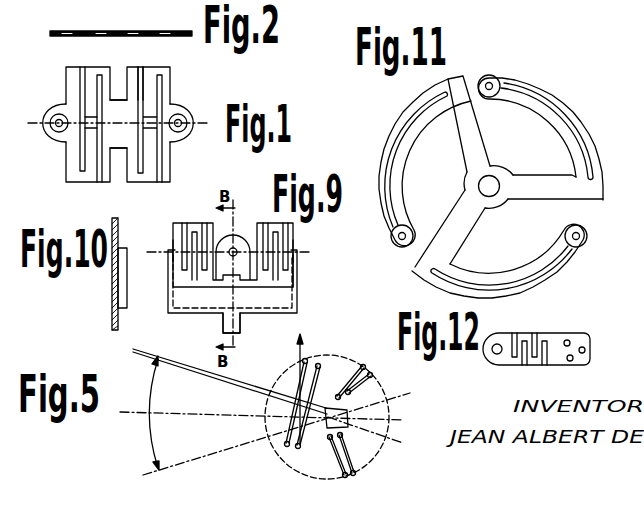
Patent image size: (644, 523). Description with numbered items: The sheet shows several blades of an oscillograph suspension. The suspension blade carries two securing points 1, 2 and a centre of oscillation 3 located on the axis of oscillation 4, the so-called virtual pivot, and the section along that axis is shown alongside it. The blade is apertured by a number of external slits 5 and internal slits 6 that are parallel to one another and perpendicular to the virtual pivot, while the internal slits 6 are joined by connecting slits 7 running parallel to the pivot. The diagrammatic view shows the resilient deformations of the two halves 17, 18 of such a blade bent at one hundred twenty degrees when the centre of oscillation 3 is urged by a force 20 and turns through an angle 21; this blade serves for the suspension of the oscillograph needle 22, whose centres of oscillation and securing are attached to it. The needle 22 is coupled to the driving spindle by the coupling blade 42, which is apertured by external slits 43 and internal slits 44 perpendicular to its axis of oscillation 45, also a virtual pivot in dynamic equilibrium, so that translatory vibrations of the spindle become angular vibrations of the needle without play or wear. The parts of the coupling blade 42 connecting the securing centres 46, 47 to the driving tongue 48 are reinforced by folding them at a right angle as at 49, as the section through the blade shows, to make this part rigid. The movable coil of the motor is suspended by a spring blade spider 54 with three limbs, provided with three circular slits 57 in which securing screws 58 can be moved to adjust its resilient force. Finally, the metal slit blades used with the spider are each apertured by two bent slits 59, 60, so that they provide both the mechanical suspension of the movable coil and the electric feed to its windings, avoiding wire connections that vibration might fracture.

In FIG. 1, the securing point 1 is at (51, 130).
In FIG. 1, the securing point 2 is at (176, 116).
In FIG. 1, the centre of oscillation 3 is at (117, 128).
In FIG. 5, the centre of oscillation 3 is at (330, 410).
In FIG. 1, the axis of oscillation 4 is at (46, 120).
In FIG. 1, the external slits 5 is at (151, 67).
In FIG. 1, the internal slits 6 is at (80, 78).
In FIG. 1, the connecting slits 7 is at (81, 128).
In FIG. 5, the blade half 17 is at (363, 376).
In FIG. 5, the blade half 18 is at (348, 476).
In FIG. 5, the force 20 is at (305, 356).
In FIG. 5, the angle 21 is at (161, 413).
In FIG. 5, the oscillograph needle 22 is at (247, 388).
In FIG. 9, the coupling blade 42 is at (232, 291).
In FIG. 5, the coupling blade 42 is at (300, 383).
In FIG. 9, the external slits 43 is at (193, 228).
In FIG. 9, the internal slits 44 is at (182, 237).
In FIG. 9, the axis of oscillation 45 is at (172, 248).
In FIG. 9, the securing centre 46 is at (172, 256).
In FIG. 9, the securing centre 47 is at (293, 260).
In FIG. 9, the driving tongue 48 is at (238, 324).
In FIG. 10, the right-angle fold 49 is at (126, 277).
In FIG. 11, the spring blade spider 54 is at (502, 168).
In FIG. 11, the circular slits 57 is at (574, 130).
In FIG. 11, the securing screws 58 is at (496, 76).
In FIG. 12, the bent slit 59 is at (541, 334).
In FIG. 12, the bent slit 60 is at (517, 334).